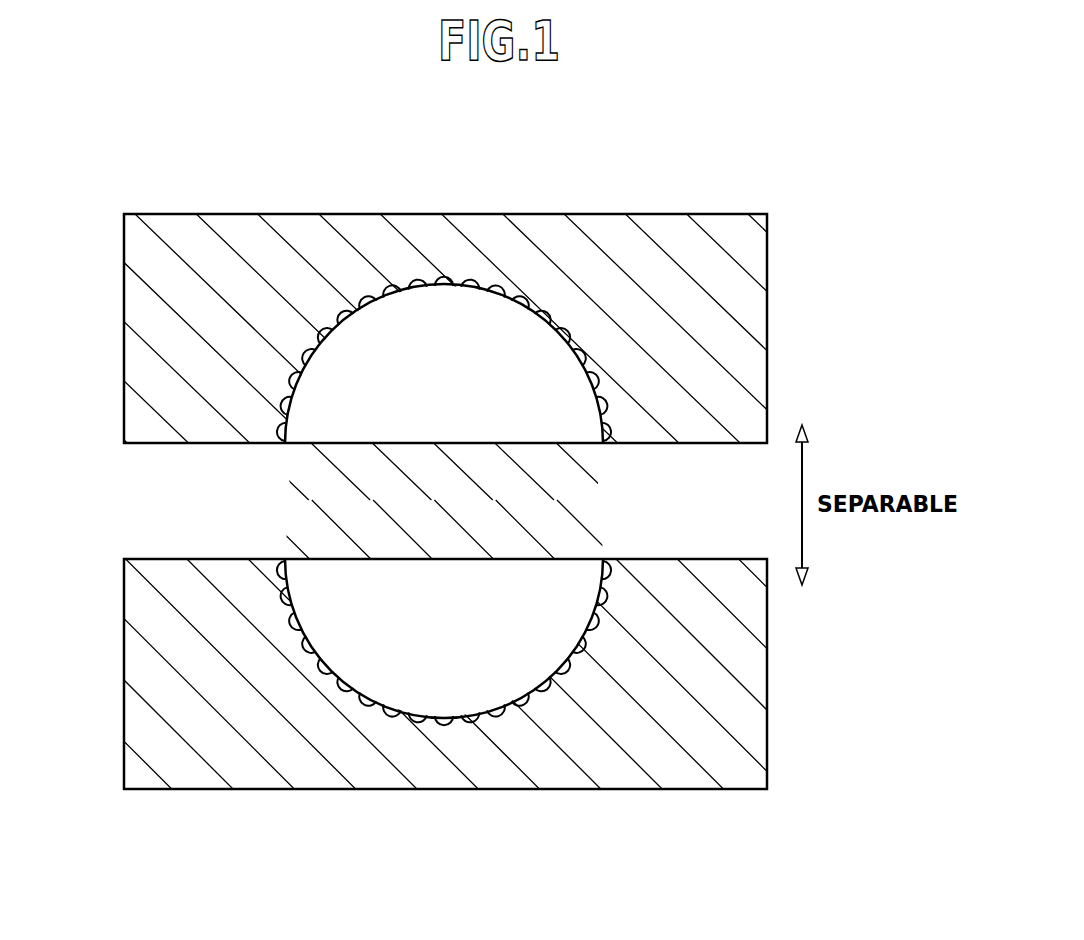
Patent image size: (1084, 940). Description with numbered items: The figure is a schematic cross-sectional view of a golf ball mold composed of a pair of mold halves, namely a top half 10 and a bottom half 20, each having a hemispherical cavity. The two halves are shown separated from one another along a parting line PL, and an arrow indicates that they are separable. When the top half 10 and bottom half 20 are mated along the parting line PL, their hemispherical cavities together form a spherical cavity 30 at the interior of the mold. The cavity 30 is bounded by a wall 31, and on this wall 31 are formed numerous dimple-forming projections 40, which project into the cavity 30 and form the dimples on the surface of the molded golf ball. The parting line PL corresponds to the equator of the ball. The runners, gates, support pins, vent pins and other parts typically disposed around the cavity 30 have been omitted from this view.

The top half 10 is at (658, 235).
The bottom half 20 is at (220, 745).
The spherical cavity 30 is at (507, 405).
The wall 31 is at (341, 322).
The dimple-forming projections 40 is at (377, 307).
The parting line PL is at (163, 443).